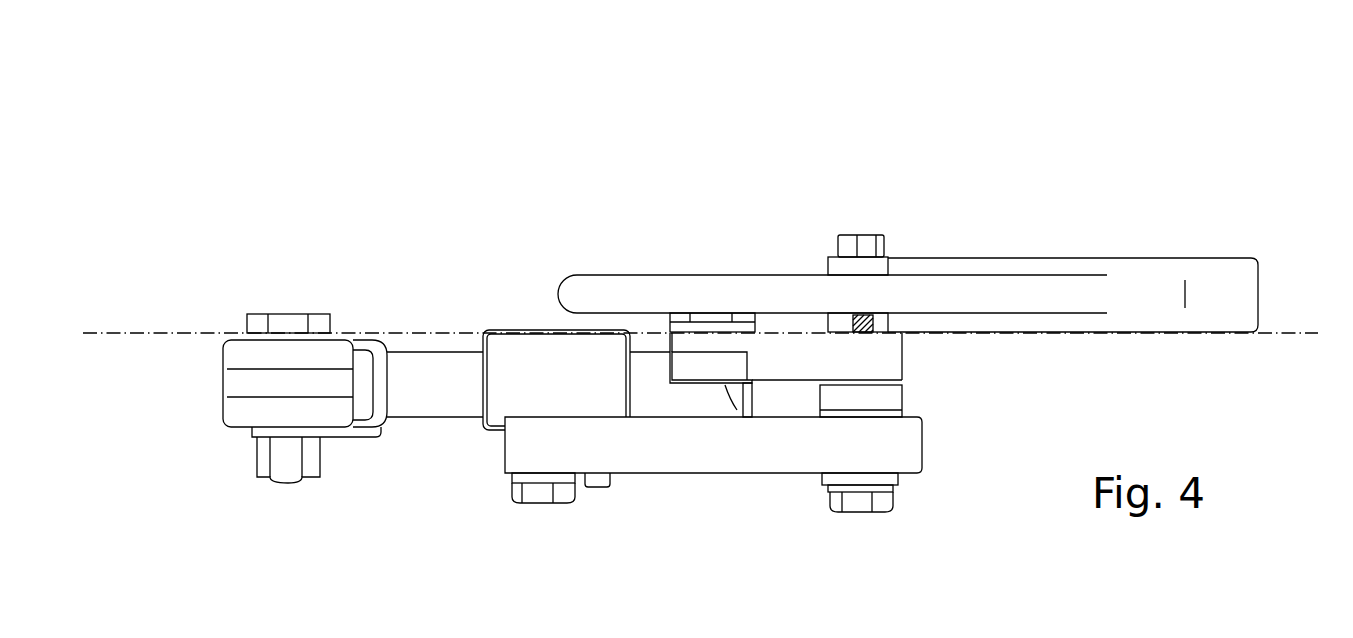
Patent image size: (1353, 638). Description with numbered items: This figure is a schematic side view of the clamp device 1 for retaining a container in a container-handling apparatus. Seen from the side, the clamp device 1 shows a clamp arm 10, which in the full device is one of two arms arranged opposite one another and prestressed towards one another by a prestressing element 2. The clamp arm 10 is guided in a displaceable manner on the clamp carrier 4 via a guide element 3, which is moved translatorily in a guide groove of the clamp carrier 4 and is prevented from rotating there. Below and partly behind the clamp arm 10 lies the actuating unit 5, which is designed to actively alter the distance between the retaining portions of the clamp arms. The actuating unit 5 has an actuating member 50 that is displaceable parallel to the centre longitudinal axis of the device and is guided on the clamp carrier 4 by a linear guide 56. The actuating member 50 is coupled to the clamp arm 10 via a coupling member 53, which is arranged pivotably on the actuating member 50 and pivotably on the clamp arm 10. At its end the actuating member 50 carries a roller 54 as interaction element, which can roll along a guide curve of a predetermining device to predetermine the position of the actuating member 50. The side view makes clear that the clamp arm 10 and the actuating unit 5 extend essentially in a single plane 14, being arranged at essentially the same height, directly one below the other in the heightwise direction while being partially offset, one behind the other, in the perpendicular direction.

The clamp device 1 is at (177, 153).
The prestressing element 2 is at (605, 270).
The guide element 3 is at (870, 243).
The clamp carrier 4 is at (902, 445).
The actuating unit 5 is at (311, 255).
The clamp arm 10 is at (1135, 281).
The plane 14 is at (110, 330).
The actuating member 50 is at (427, 397).
The coupling member 53 is at (693, 370).
The roller 54 is at (232, 383).
The linear guide 56 is at (527, 353).